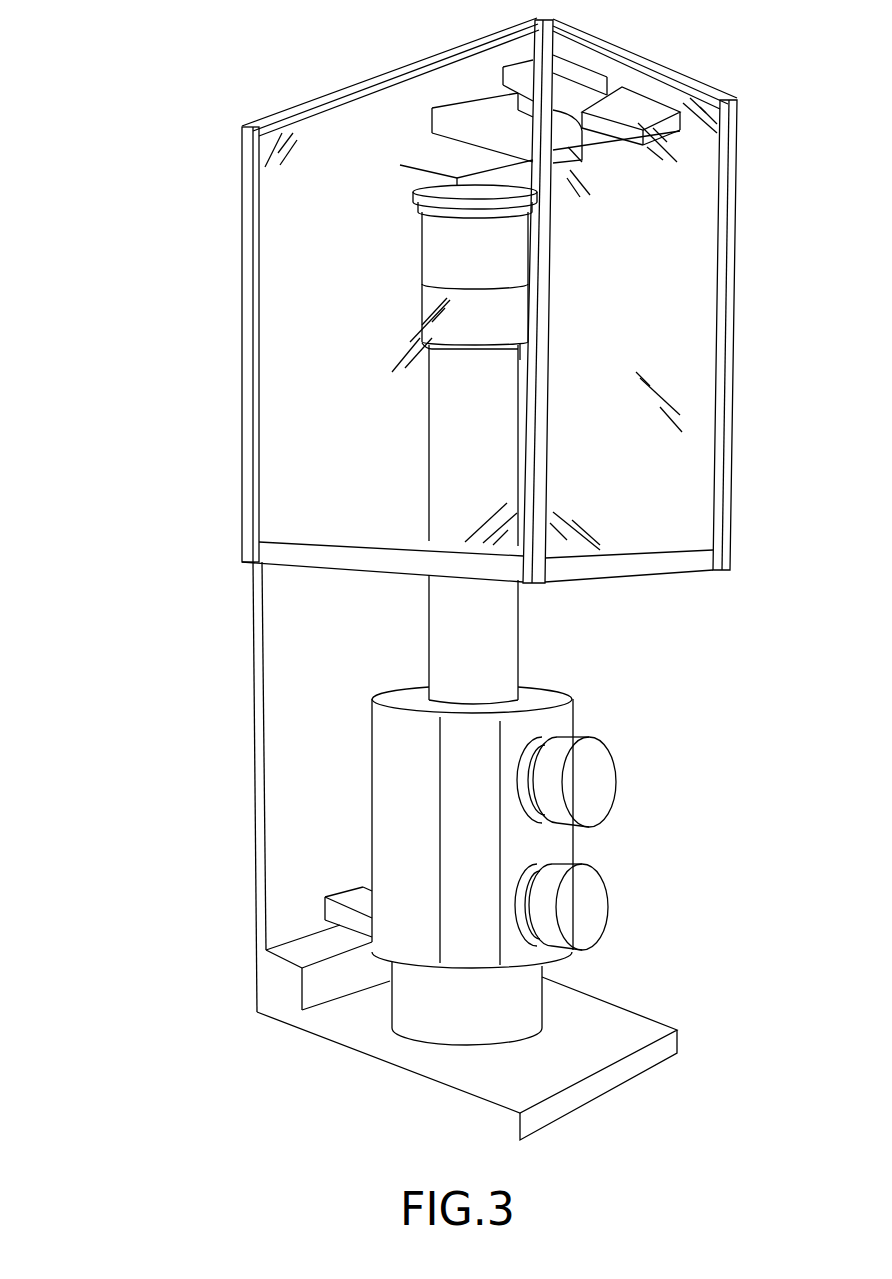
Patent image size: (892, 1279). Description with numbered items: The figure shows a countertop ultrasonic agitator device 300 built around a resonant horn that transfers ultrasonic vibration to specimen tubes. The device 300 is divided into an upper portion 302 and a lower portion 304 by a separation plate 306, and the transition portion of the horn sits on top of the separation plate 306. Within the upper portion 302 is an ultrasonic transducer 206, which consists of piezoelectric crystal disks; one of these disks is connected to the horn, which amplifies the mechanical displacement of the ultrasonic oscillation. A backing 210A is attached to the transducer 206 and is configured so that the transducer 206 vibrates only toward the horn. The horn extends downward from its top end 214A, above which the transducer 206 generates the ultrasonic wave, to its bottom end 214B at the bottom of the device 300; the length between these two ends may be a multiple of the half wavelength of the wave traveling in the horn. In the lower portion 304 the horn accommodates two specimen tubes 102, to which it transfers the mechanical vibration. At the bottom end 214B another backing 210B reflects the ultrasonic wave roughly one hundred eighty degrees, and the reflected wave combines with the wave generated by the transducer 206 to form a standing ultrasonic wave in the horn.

The countertop ultrasonic agitator device 300 is at (175, 72).
The upper portion 302 is at (290, 377).
The lower portion 304 is at (220, 945).
The separation plate 306 is at (673, 560).
The specimen tube 102 is at (590, 795).
The backing 210A is at (483, 250).
The ultrasonic transducer 206 is at (480, 312).
The top end 214A is at (493, 343).
The backing 210B is at (413, 1012).
The bottom end 214B is at (521, 968).